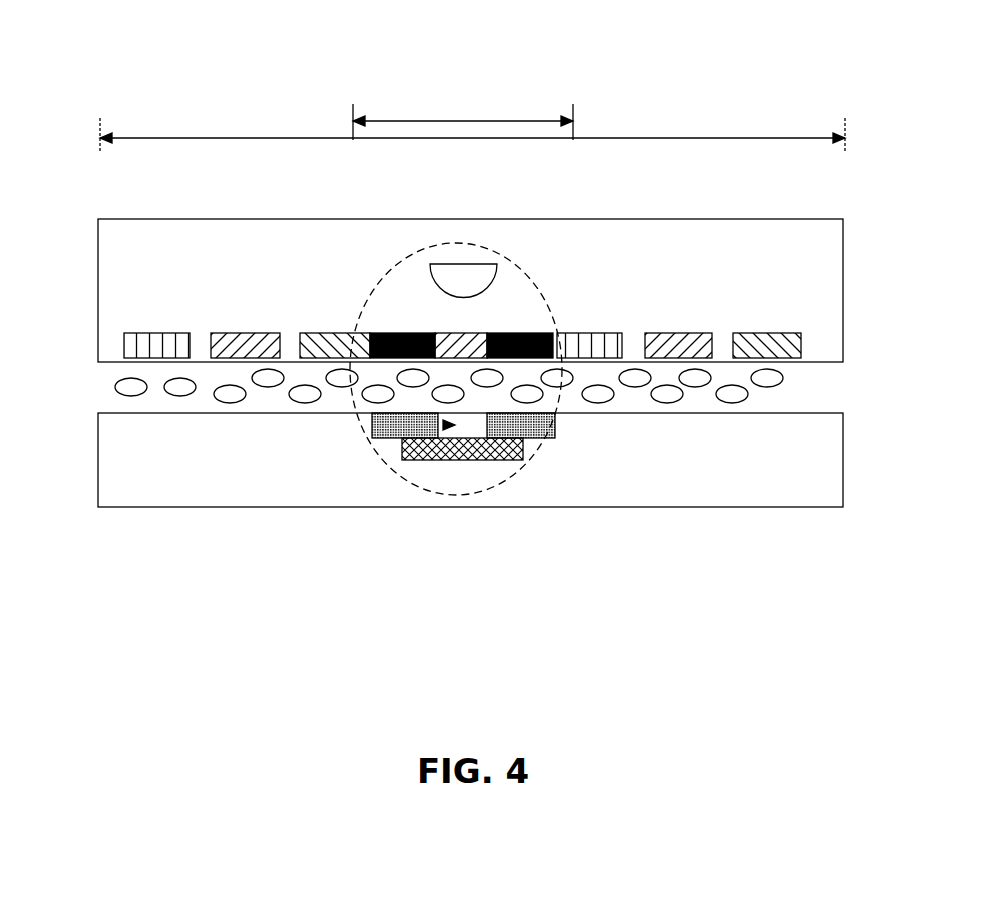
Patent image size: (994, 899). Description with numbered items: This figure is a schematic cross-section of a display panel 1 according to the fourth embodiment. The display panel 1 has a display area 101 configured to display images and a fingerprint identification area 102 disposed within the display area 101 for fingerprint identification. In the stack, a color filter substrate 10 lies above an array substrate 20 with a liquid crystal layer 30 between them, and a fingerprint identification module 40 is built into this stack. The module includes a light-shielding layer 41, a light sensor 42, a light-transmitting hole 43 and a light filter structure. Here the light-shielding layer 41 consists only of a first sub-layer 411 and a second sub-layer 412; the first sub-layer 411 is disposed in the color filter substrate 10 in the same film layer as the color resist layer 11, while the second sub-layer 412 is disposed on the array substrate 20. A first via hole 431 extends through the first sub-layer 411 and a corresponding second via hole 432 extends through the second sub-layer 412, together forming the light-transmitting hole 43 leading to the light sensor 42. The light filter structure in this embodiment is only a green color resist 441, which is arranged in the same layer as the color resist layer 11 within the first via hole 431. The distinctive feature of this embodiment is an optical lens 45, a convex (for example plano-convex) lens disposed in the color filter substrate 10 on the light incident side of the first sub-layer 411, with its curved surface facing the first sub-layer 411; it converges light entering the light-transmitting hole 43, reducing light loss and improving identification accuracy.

The display panel 1 is at (468, 36).
The display area 101 is at (472, 119).
The fingerprint identification area 102 is at (463, 106).
The color filter substrate 10 is at (84, 218).
The array substrate 20 is at (84, 413).
The color resist layer 11 is at (768, 333).
The liquid crystal layer 30 is at (785, 372).
The optical lens 45 is at (430, 266).
The color resist 441 is at (440, 356).
The fingerprint identification module 40 is at (426, 494).
The light-shielding layer 41 is at (690, 565).
The first sub-layer 411 is at (540, 358).
The second sub-layer 412 is at (545, 440).
The light sensor 42 is at (473, 461).
The light-transmitting hole 43 is at (340, 565).
The first via hole 431 is at (439, 356).
The second via hole 432 is at (440, 425).